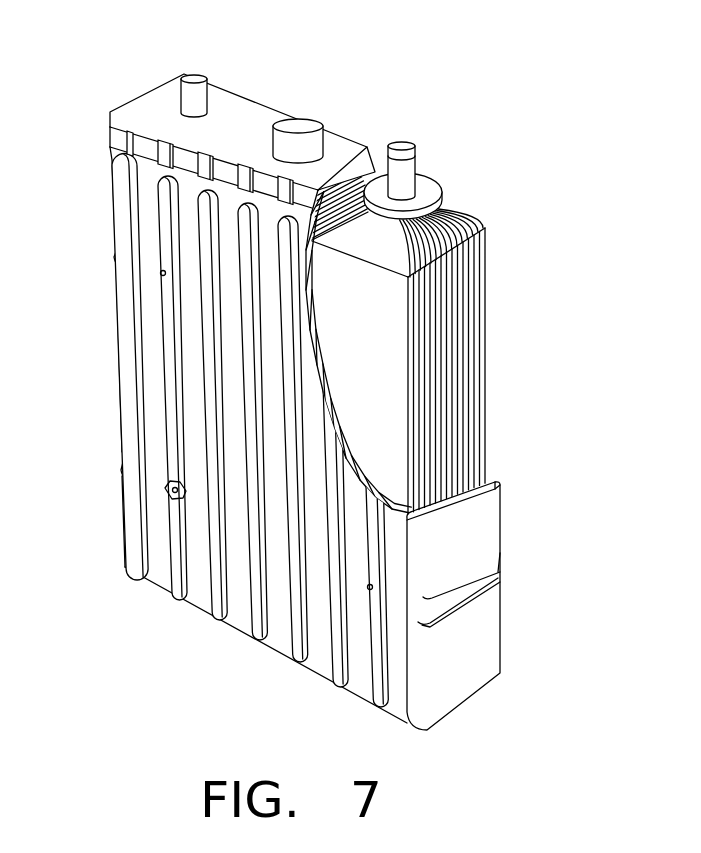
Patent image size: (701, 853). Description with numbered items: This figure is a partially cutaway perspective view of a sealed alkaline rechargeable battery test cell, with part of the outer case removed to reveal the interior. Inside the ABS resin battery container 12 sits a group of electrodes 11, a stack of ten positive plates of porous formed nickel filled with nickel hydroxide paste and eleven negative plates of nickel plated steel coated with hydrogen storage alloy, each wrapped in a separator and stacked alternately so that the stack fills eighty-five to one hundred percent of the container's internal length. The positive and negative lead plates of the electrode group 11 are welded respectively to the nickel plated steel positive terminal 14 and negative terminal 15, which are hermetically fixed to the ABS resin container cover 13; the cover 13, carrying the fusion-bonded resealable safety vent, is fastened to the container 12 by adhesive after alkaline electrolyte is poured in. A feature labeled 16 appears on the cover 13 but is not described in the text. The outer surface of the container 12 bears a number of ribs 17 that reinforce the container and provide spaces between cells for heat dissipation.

The group of electrodes 11 is at (460, 298).
The battery container 12 is at (112, 198).
The container cover 13 is at (251, 115).
The positive terminal 14 is at (194, 76).
The negative terminal 15 is at (407, 143).
The cap 16 is at (310, 133).
The ribs 17 is at (213, 552).